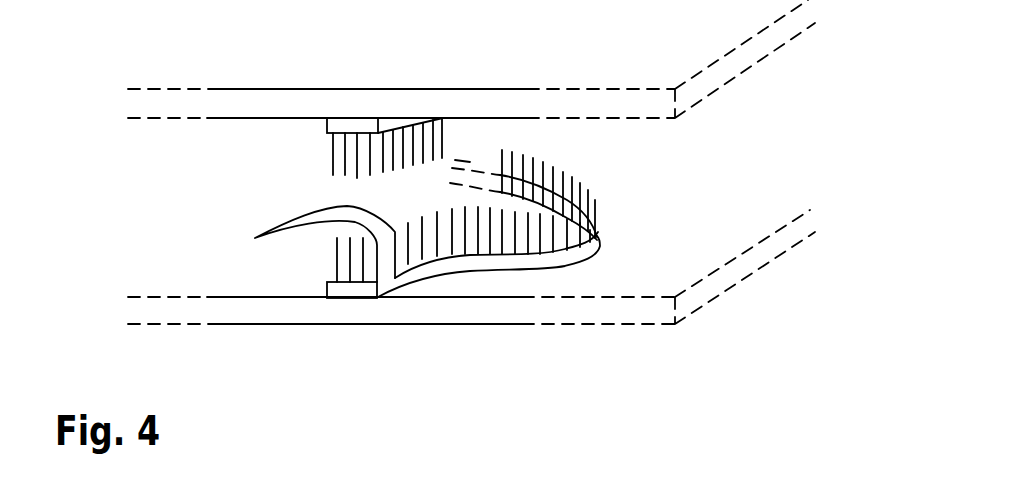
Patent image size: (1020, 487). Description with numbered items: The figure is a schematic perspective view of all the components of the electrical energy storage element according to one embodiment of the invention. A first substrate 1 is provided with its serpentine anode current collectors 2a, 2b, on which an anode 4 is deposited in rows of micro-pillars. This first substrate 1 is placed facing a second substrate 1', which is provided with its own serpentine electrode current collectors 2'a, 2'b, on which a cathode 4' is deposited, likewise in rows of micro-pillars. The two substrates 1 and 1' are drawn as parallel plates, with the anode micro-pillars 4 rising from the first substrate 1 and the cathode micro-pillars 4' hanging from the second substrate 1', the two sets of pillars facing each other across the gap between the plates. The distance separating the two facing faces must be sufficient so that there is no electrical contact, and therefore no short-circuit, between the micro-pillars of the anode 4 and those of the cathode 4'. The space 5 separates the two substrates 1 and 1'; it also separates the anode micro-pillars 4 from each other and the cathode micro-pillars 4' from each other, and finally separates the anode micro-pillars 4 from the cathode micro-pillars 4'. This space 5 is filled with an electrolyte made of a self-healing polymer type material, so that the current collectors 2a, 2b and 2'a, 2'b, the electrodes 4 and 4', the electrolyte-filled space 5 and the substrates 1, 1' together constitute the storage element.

The first substrate 1 is at (471, 314).
The second substrate 1' is at (471, 59).
The anode 4 is at (446, 295).
The cathode 4' is at (329, 179).
The space 5 is at (468, 155).
The serpentine anode current collector 2a is at (516, 310).
The serpentine anode current collector 2b is at (597, 245).
The serpentine electrode current collector 2'a is at (220, 147).
The serpentine electrode current collector 2'b is at (220, 147).